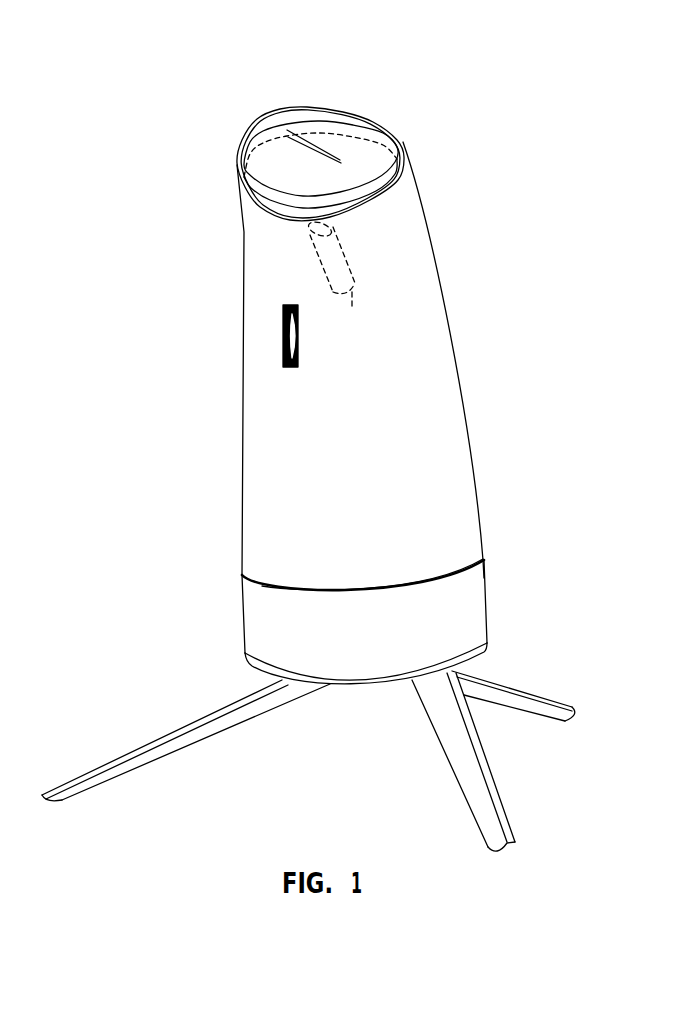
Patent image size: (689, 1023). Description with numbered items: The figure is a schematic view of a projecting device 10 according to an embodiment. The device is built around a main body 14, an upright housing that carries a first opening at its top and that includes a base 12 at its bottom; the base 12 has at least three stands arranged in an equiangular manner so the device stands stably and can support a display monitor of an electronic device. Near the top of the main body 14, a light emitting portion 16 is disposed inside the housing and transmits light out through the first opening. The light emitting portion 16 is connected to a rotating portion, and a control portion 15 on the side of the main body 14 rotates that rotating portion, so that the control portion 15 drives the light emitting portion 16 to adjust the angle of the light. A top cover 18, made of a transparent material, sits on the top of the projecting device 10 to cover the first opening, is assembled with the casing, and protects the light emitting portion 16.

The projecting device 10 is at (308, 436).
The base 12 is at (183, 733).
The main body 14 is at (277, 445).
The control portion 15 is at (283, 340).
The light emitting portion 16 is at (318, 255).
The top cover 18 is at (328, 142).